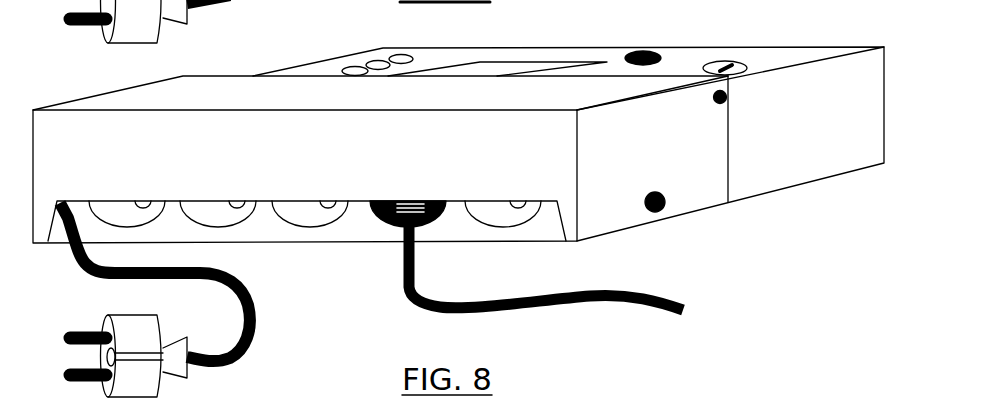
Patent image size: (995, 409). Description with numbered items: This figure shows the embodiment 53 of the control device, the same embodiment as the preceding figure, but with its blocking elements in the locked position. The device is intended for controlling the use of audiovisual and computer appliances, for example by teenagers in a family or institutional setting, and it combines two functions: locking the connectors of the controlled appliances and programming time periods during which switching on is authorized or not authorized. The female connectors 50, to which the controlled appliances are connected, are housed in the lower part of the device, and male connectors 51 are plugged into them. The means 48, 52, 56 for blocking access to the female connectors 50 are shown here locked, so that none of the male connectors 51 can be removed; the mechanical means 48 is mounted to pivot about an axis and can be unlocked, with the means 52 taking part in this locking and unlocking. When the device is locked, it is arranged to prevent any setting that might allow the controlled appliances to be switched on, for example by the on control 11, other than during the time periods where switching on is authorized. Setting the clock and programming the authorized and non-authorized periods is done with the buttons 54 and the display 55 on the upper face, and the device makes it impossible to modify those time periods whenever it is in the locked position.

The on control 11 is at (645, 52).
The mechanical means 48 is at (683, 155).
The female connectors 50 is at (500, 227).
The male connector 51 is at (430, 223).
The means 52 is at (650, 212).
The embodiment 53 is at (812, 187).
The buttons 54 is at (389, 56).
The display 55 is at (505, 60).
The means for blocking access 56 is at (740, 61).